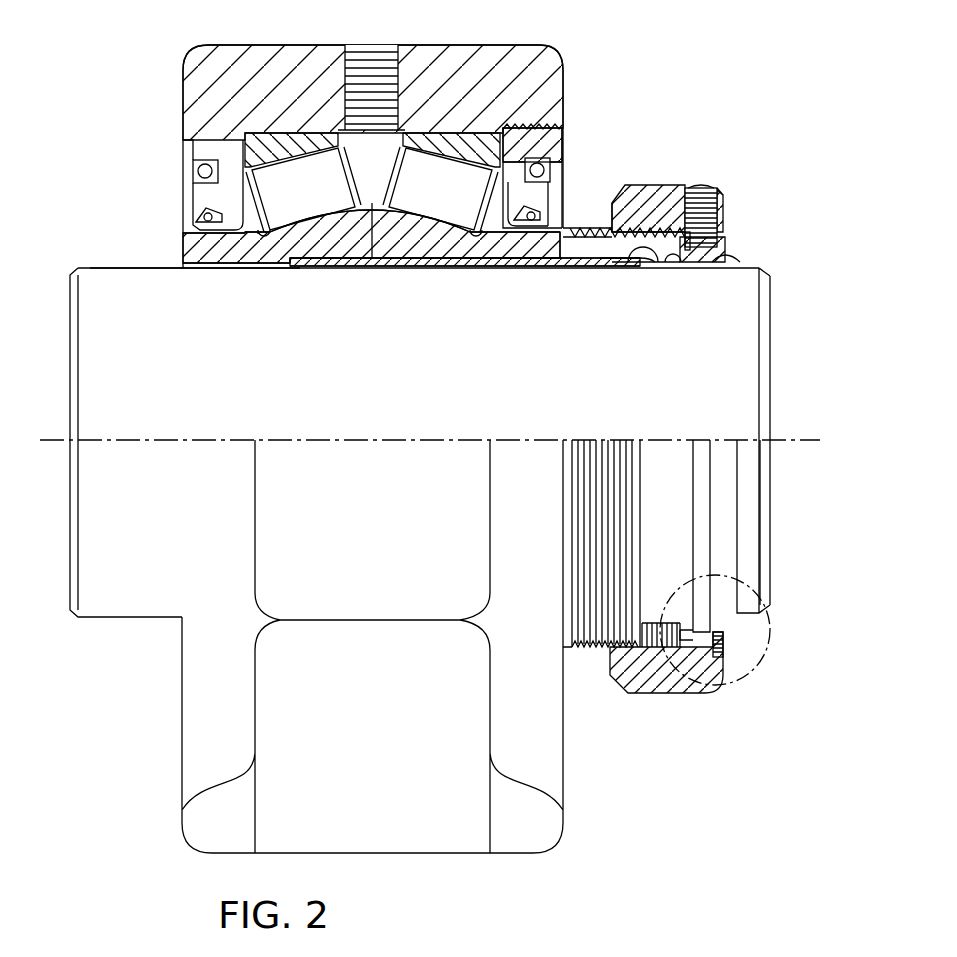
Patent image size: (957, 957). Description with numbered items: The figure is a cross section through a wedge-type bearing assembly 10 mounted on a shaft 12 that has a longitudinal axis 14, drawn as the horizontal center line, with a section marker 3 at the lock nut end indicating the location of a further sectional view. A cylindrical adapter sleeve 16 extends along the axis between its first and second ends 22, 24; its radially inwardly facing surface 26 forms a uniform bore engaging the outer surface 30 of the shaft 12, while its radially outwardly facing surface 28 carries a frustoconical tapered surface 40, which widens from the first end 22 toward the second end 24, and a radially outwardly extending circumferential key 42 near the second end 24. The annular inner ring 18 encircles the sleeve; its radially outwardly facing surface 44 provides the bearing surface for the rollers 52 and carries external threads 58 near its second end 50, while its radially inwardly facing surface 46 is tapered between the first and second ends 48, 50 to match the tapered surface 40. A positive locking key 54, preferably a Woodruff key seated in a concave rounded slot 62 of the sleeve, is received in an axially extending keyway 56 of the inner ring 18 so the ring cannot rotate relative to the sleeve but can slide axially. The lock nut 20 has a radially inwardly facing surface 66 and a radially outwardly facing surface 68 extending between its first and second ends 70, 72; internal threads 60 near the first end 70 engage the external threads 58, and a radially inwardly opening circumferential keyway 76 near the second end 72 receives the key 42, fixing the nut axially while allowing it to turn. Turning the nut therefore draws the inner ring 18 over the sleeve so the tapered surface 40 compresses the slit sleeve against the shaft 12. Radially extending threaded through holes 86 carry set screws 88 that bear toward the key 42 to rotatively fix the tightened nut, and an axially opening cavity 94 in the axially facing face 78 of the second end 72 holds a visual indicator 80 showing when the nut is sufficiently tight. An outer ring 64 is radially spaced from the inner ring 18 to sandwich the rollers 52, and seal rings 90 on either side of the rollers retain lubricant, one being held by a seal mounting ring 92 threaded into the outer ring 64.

The wedge-type bearing assembly 10 is at (652, 48).
The shaft 12 is at (74, 266).
The longitudinal axis 14 is at (55, 440).
The adapter sleeve 16 is at (398, 270).
The inner ring 18 is at (190, 238).
The lock nut 20 is at (685, 187).
The adapter sleeve first end 22 is at (293, 265).
The adapter sleeve second end 24 is at (735, 256).
The radially inwardly facing surface 26 is at (468, 266).
The radially outwardly facing surface 28 is at (443, 186).
The outer surface 30 is at (118, 268).
The tapered surface 40 is at (334, 268).
The circumferential key 42 is at (700, 240).
The radially outwardly facing surface 44 is at (360, 207).
The radially inwardly facing surface 46 is at (420, 257).
The inner ring first end 48 is at (185, 252).
The inner ring second end 50 is at (644, 262).
The rollers 52 is at (408, 170).
The positive locking key 54 is at (664, 266).
The axially extending keyway 56 is at (578, 266).
The external threads 58 is at (546, 264).
The internal threads 60 is at (650, 222).
The concave rounded slot 62 is at (630, 266).
The outer ring 64 is at (545, 50).
The radially inwardly facing surface 66 is at (690, 262).
The radially outwardly facing surface 68 is at (624, 198).
The lock nut first end 70 is at (612, 220).
The lock nut second end 72 is at (718, 210).
The circumferential keyway 76 is at (720, 262).
The axially facing face 78 is at (728, 680).
The visual indicator 80 is at (727, 638).
The threaded through holes 86 is at (713, 185).
The set screws 88 is at (725, 194).
The seal rings 90 is at (198, 172).
The seal mounting ring 92 is at (548, 142).
The axially opening cavity 94 is at (725, 657).
The section line 3- 3 is at (777, 620).